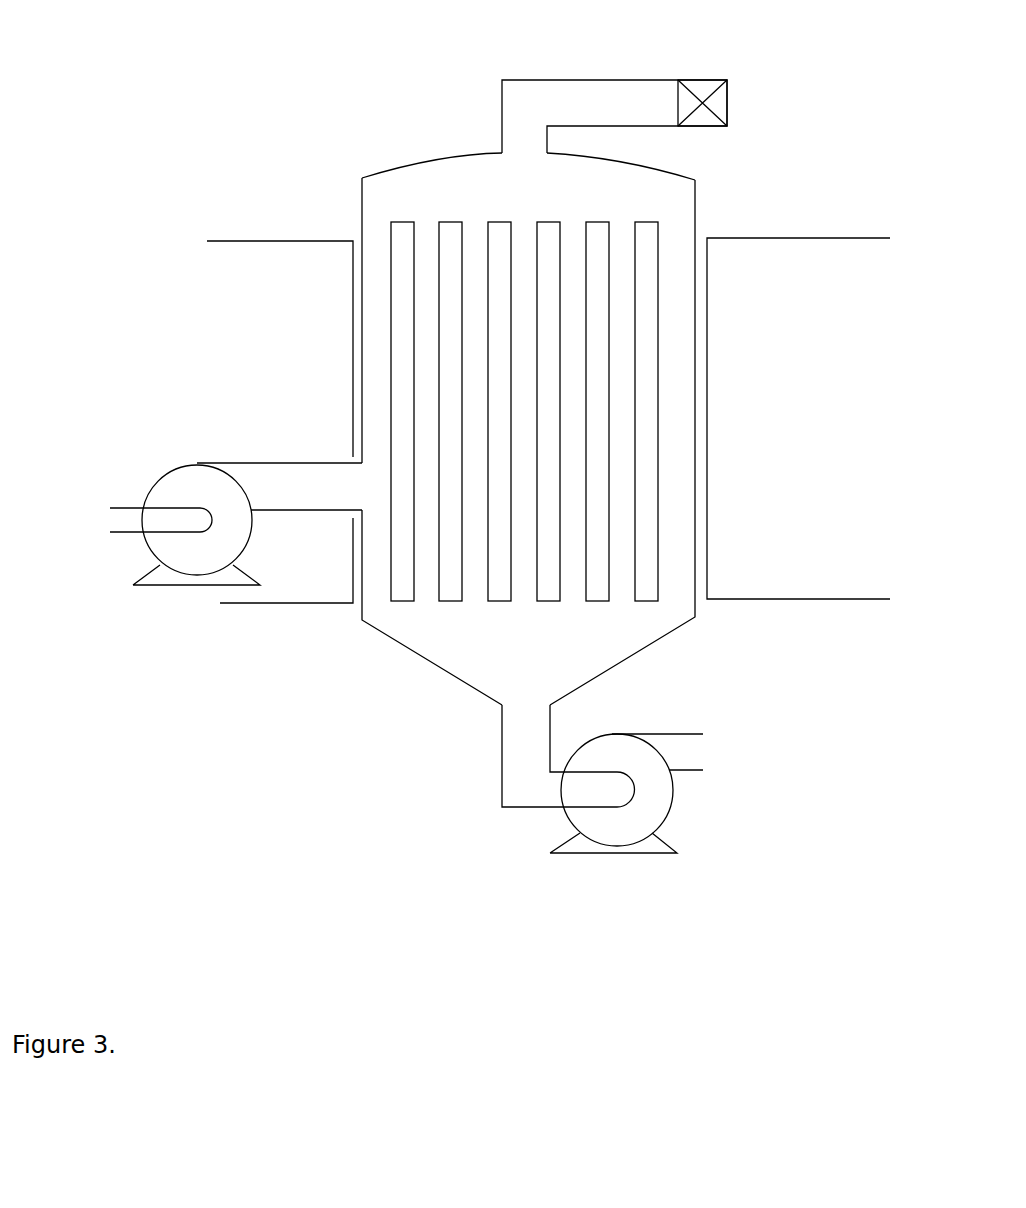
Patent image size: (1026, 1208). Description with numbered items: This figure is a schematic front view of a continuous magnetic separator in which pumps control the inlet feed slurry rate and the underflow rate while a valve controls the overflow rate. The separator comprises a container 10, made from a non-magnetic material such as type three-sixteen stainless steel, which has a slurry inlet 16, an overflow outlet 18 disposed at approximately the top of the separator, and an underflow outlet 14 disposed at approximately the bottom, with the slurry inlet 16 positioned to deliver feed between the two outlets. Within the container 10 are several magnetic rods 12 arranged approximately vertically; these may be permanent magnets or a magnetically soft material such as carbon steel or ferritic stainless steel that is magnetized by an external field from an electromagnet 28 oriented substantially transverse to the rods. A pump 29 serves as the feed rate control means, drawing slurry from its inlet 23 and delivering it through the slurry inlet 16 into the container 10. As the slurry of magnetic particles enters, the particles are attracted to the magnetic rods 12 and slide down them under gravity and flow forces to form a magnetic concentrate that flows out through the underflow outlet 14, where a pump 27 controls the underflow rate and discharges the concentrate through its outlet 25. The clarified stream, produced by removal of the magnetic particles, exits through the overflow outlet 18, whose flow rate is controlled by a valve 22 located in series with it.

The container 10 is at (630, 662).
The magnetic rod 12 is at (655, 597).
The underflow outlet 14 is at (500, 732).
The slurry inlet 16 is at (308, 515).
The overflow outlet 18 is at (613, 78).
The valve 22 is at (708, 77).
The feed inlet 23 is at (123, 519).
The product outlet 25 is at (690, 752).
The pump 27 is at (667, 810).
The electromagnet 28 is at (262, 607).
The pump 29 is at (187, 463).